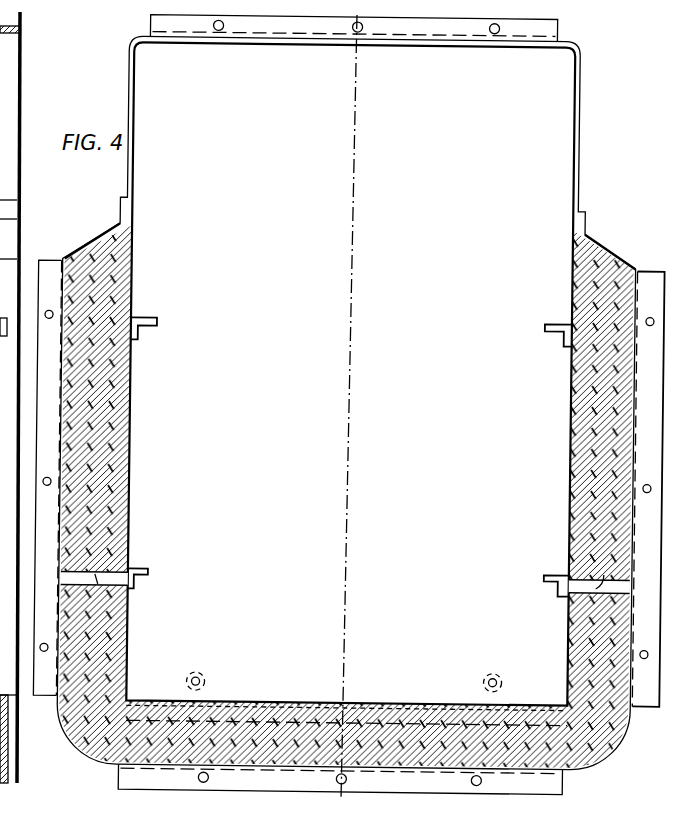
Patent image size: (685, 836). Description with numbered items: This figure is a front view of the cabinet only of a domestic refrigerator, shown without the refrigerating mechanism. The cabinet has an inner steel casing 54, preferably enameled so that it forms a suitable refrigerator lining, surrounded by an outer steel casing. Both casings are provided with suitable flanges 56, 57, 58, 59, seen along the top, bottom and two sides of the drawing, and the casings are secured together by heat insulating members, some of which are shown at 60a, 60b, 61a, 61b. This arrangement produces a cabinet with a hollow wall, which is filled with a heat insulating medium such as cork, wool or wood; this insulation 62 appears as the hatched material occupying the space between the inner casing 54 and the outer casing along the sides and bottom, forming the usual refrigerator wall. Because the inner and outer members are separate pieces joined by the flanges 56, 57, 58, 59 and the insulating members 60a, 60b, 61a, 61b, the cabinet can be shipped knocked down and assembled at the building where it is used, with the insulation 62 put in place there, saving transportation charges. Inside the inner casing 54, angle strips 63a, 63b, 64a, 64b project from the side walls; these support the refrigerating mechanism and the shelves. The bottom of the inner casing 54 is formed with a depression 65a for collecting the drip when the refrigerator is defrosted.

The inner steel casing 54 is at (133, 503).
The flange 56 is at (29, 18).
The flange 57 is at (134, 775).
The flange 58 is at (52, 258).
The flange 59 is at (652, 283).
The heat insulating member 60a is at (128, 588).
The heat insulating member 60b is at (606, 593).
The heat insulating member 61a is at (208, 668).
The heat insulating member 61b is at (500, 670).
The insulation 62 is at (587, 735).
The angle strip 63a is at (141, 317).
The angle strip 63b is at (558, 325).
The angle strip 64a is at (143, 567).
The angle strip 64b is at (553, 575).
The depression 65a is at (353, 702).